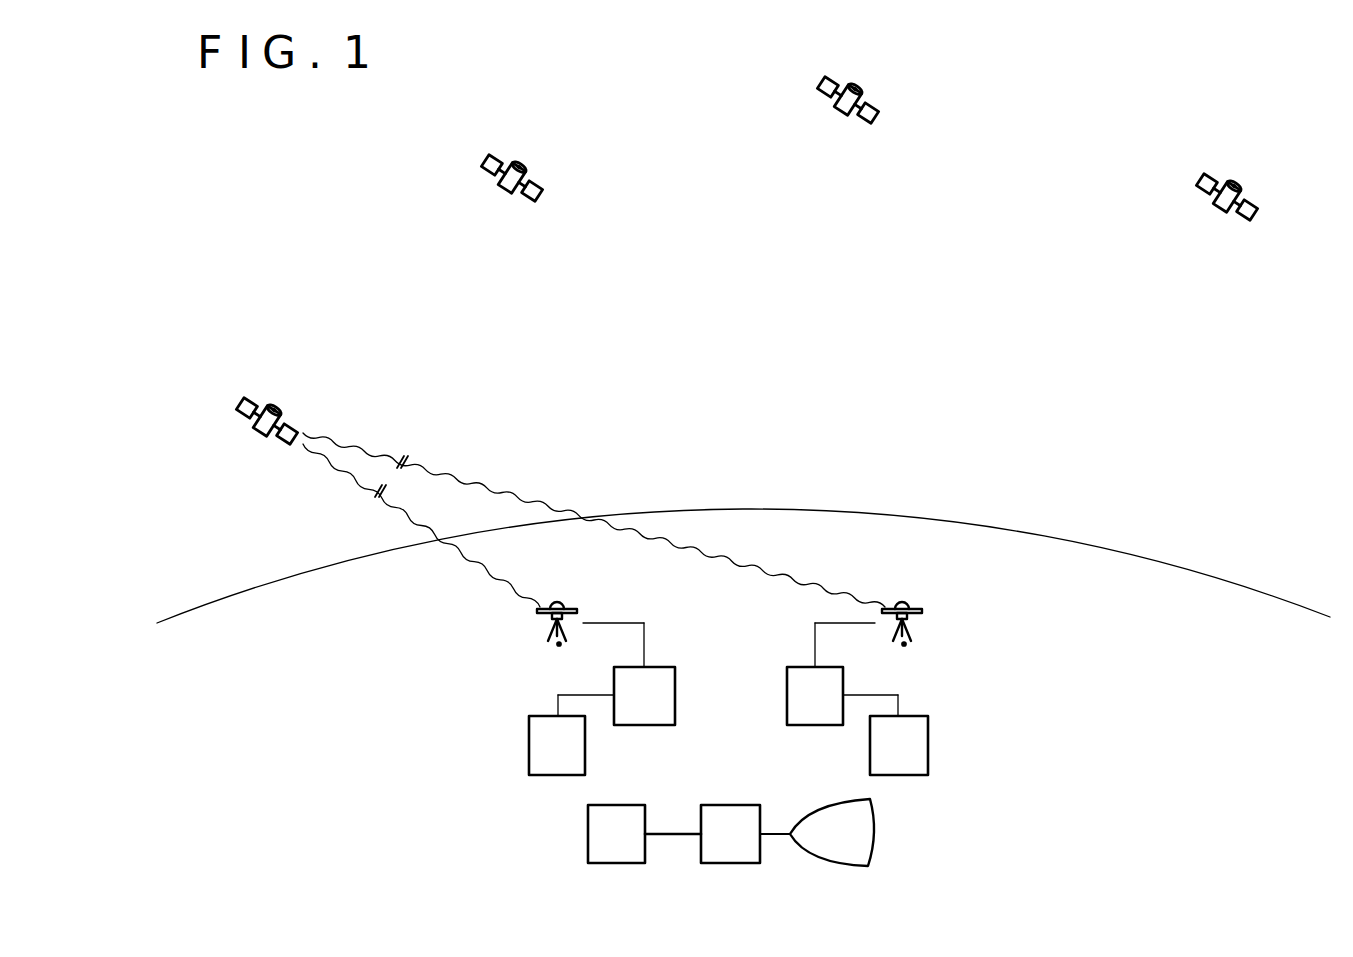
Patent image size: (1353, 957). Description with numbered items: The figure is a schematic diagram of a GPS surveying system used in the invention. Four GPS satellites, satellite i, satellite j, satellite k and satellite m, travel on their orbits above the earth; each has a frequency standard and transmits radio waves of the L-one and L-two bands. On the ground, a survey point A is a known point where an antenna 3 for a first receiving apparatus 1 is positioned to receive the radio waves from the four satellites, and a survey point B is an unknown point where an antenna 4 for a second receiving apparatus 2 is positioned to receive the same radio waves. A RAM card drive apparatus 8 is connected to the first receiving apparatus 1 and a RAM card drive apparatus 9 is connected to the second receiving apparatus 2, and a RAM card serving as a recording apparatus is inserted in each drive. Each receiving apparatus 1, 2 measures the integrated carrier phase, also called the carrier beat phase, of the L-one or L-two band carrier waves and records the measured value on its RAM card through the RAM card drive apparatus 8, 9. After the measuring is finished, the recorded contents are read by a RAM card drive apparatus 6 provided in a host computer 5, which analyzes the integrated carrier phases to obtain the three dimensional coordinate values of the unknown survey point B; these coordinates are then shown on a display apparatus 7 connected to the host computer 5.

The first receiving apparatus 1 is at (657, 667).
The second receiving apparatus 2 is at (793, 667).
The antenna 3 is at (562, 608).
The antenna 4 is at (912, 608).
The host computer 5 is at (717, 808).
The RAM card drive apparatus 6 is at (597, 835).
The display apparatus 7 is at (870, 820).
The RAM card drive apparatus 8 is at (529, 750).
The RAM card drive apparatus 9 is at (920, 746).
The survey point A is at (559, 645).
The survey point B is at (904, 645).
The satellite i is at (283, 412).
The satellite j is at (539, 180).
The satellite k is at (870, 95).
The satellite m is at (1250, 190).